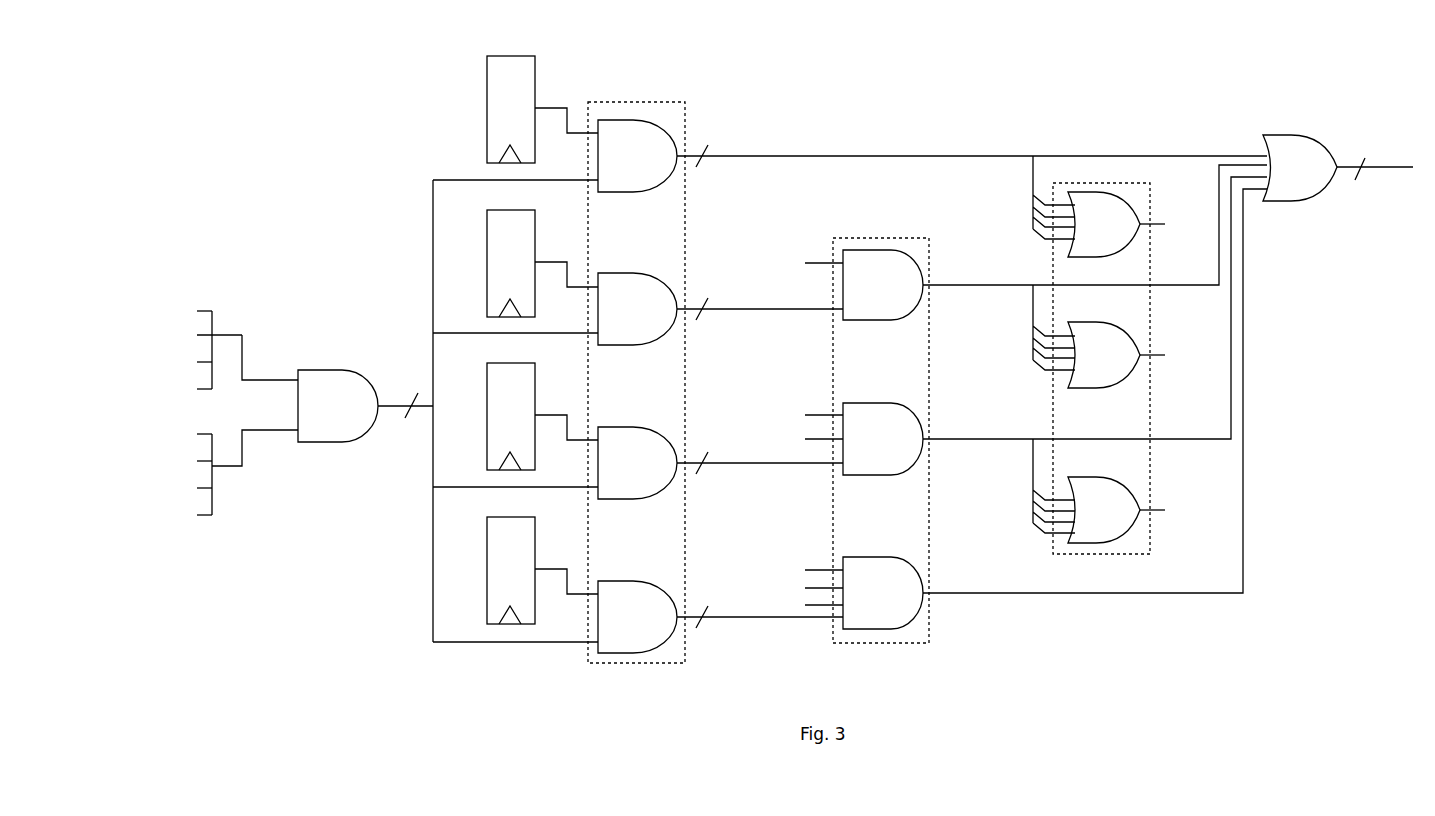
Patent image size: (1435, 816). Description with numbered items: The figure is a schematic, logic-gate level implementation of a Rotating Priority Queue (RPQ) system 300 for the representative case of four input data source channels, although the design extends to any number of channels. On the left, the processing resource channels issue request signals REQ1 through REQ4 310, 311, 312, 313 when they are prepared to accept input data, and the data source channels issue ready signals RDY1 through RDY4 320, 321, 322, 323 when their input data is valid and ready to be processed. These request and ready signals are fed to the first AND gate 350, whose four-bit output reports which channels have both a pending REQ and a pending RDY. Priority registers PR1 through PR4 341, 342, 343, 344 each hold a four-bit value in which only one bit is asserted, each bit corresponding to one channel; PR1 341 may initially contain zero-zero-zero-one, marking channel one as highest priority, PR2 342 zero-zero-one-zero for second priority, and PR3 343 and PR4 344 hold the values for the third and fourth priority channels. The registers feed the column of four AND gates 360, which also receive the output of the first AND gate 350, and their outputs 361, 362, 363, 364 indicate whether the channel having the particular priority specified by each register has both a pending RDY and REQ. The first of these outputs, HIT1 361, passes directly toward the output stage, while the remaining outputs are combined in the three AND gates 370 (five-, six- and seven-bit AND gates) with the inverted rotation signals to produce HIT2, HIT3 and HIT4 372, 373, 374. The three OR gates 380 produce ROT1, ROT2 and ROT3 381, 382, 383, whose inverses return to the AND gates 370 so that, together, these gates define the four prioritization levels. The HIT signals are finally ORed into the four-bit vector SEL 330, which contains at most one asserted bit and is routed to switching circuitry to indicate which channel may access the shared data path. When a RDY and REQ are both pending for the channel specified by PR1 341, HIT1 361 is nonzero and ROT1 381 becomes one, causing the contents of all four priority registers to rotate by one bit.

The Rotating Priority Queue (RPQ) system 300 is at (283, 90).
The request (REQ) signal 310 is at (124, 306).
The request (REQ) signal 311 is at (124, 328).
The request (REQ) signal 312 is at (124, 351).
The request (REQ) signal 313 is at (124, 374).
The ready (RDY) signal 320 is at (128, 432).
The ready (RDY) signal 321 is at (128, 455).
The ready (RDY) signal 322 is at (128, 478).
The ready (RDY) signal 323 is at (128, 503).
The four-bit vector SEL 330 is at (1375, 173).
The priority register PR1 341 is at (537, 56).
The priority register PR2 342 is at (537, 210).
The priority register PR3 343 is at (537, 363).
The priority register PR4 344 is at (537, 517).
The first AND gate 350 is at (357, 370).
The column of four AND gates 360 is at (660, 663).
The HIT1 output 361 is at (747, 159).
The AND gate output 362 is at (748, 312).
The AND gate output 363 is at (750, 466).
The AND gate output 364 is at (750, 620).
The three AND gates 370 is at (917, 643).
The HIT2 signal 372 is at (963, 288).
The HIT3 signal 373 is at (965, 442).
The HIT4 signal 374 is at (965, 596).
The three OR gates 380 is at (1150, 554).
The ROT1 signal 381 is at (1157, 222).
The ROT2 signal 382 is at (1157, 352).
The ROT3 signal 383 is at (1157, 507).